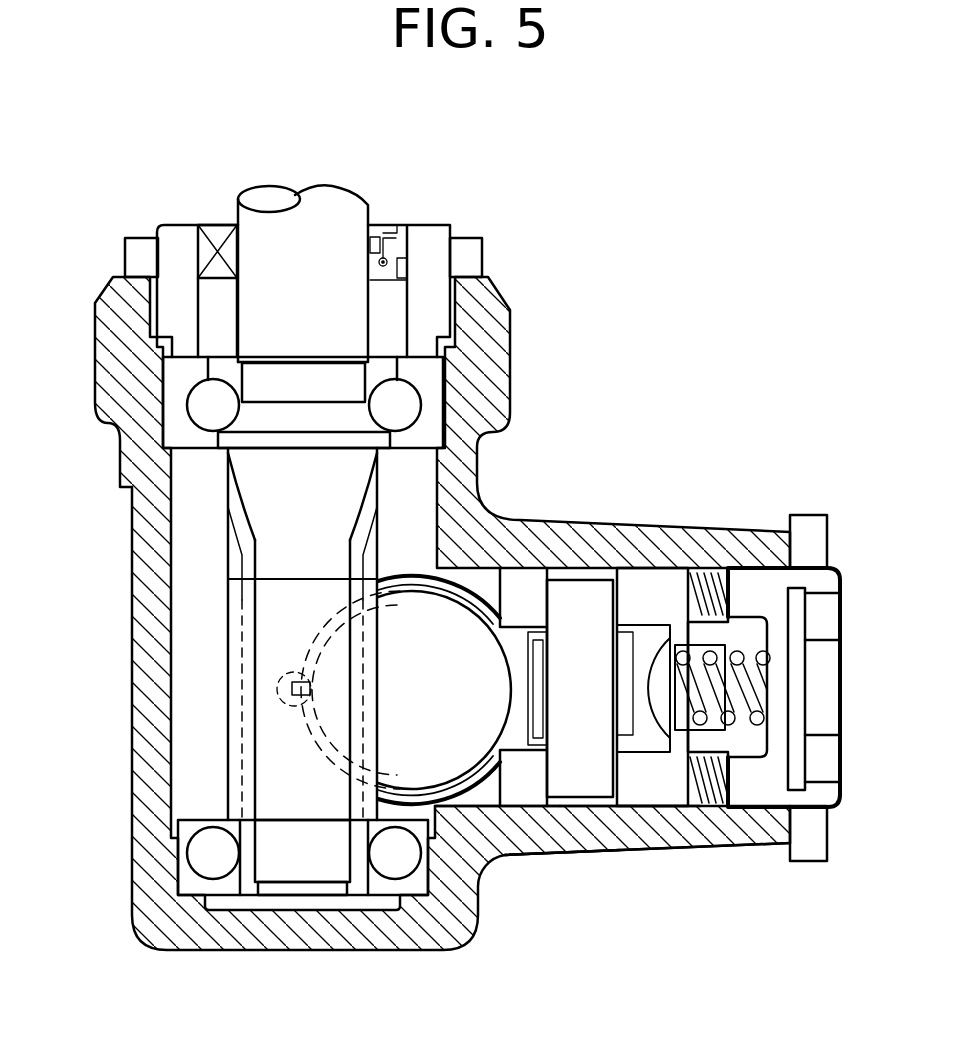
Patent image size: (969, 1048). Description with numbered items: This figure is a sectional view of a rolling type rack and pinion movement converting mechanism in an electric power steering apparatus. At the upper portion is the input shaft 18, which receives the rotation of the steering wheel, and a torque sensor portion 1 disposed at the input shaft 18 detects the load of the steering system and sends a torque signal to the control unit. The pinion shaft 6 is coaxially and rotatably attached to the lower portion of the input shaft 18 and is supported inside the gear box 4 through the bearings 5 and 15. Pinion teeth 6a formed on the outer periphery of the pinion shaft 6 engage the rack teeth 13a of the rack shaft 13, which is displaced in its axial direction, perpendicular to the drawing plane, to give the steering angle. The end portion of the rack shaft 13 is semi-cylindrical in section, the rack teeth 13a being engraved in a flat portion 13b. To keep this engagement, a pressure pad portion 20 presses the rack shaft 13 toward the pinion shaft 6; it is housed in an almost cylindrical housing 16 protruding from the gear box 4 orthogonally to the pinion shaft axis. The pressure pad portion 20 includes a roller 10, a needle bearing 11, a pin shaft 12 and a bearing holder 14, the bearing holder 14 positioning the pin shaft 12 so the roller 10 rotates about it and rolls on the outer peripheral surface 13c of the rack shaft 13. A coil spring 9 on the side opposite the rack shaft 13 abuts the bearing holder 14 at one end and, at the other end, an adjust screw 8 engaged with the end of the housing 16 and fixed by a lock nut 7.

The torque sensor portion 1 is at (437, 225).
The gear box 4 is at (183, 950).
The bearing 5 is at (173, 400).
The pinion shaft 6 is at (268, 617).
The pinion teeth 6a is at (242, 677).
The lock nut 7 is at (808, 518).
The adjust screw 8 is at (842, 617).
The coil spring 9 is at (760, 677).
The roller 10 is at (513, 633).
The needle bearing 11 is at (620, 657).
The pin shaft 12 is at (573, 808).
The rack shaft 13 is at (446, 704).
The rack teeth 13a is at (300, 760).
The flat portion 13b is at (380, 748).
The outer peripheral surface 13c is at (450, 588).
The bearing holder 14 is at (508, 808).
The bearing 15 is at (178, 858).
The housing 16 is at (713, 850).
The input shaft 18 is at (238, 207).
The pressure pad portion 20 is at (533, 840).